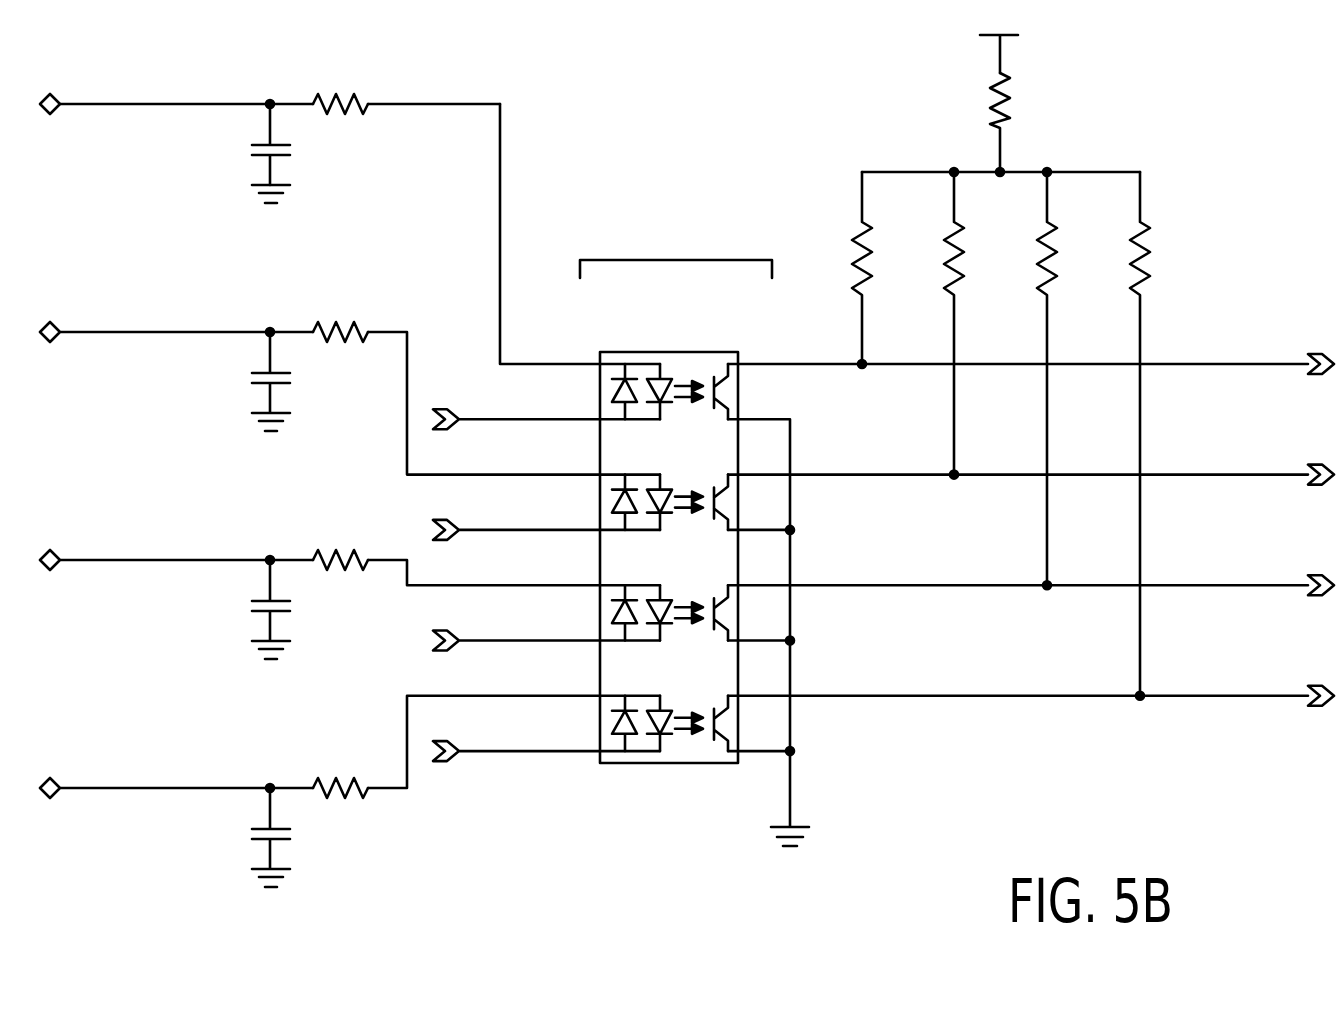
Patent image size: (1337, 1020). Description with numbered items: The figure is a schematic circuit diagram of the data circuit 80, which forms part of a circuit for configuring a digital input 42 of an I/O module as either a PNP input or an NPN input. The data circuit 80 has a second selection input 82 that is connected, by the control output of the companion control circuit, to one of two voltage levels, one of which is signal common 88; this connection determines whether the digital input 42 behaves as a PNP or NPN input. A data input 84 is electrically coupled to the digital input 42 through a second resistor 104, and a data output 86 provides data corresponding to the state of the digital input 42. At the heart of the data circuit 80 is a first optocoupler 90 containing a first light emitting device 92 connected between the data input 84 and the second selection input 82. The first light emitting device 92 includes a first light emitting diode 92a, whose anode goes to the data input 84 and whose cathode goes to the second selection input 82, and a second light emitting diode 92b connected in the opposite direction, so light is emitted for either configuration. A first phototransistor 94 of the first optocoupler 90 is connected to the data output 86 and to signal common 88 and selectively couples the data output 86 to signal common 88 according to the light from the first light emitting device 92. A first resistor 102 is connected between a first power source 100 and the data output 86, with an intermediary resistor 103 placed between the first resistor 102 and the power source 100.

The digital input 42 is at (98, 106).
The data circuit 80 is at (687, 464).
The second selection input 82 is at (462, 410).
The data input 84 is at (548, 362).
The data output 86 is at (1278, 370).
The signal common 88 is at (252, 198).
The first optocoupler 90 is at (668, 260).
The first light emitting device 92 is at (603, 366).
The first light emitting diode 92a is at (668, 405).
The second light emitting diode 92b is at (620, 408).
The first phototransistor 94 is at (724, 377).
The first power source 100 is at (1032, 12).
The first resistor 102 is at (845, 228).
The intermediary resistor 103 is at (1068, 95).
The second resistor 104 is at (338, 36).